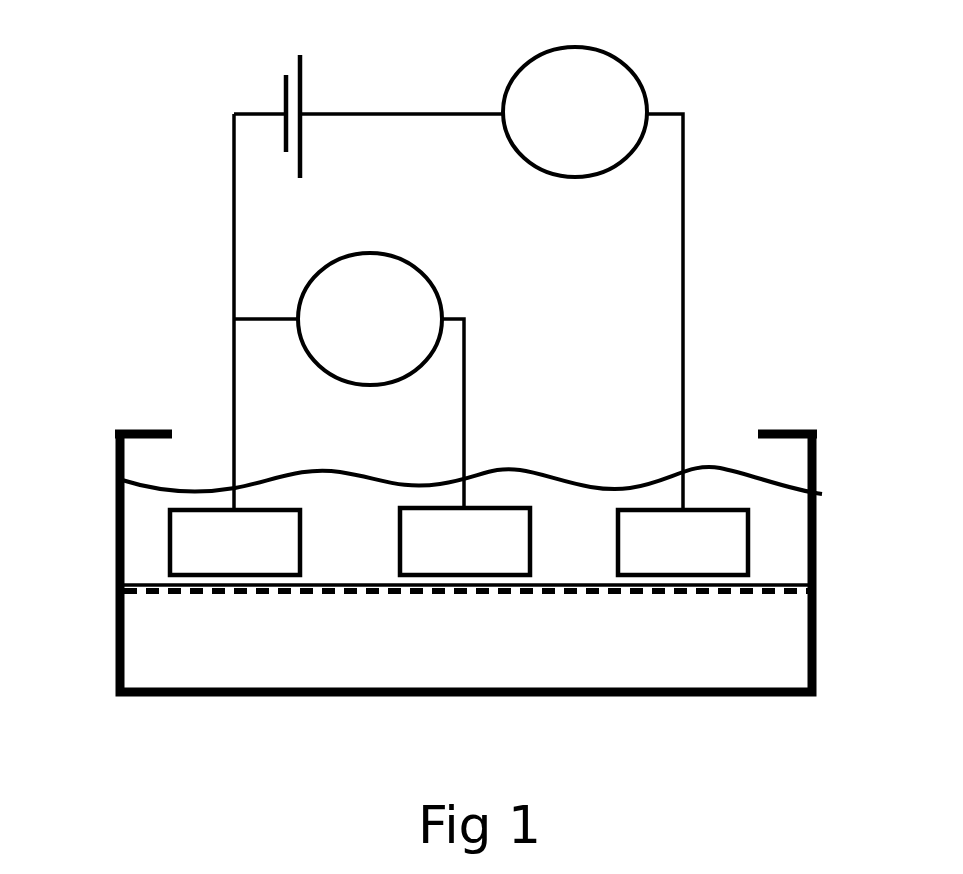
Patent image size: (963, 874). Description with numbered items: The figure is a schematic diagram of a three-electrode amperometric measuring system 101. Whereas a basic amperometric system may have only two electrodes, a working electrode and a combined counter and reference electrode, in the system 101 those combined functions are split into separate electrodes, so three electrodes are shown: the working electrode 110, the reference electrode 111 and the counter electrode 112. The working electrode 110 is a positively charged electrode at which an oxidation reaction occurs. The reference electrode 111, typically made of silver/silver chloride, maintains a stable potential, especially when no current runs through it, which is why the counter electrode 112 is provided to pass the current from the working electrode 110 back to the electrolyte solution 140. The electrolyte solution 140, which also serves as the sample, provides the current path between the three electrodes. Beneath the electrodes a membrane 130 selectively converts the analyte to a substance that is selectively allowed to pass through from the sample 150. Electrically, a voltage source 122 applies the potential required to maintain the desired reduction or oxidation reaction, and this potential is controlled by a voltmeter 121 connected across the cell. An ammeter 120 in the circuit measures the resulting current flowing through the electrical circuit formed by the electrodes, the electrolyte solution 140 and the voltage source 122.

The three-electrode amperometric measuring system 101 is at (751, 138).
The working electrode 110 is at (192, 558).
The reference electrode 111 is at (427, 562).
The counter electrode 112 is at (653, 565).
The ammeter 120 is at (597, 68).
The voltmeter 121 is at (372, 285).
The voltage source 122 is at (296, 52).
The membrane 130 is at (772, 592).
The electrolyte solution 140 is at (145, 531).
The sample 150 is at (780, 660).